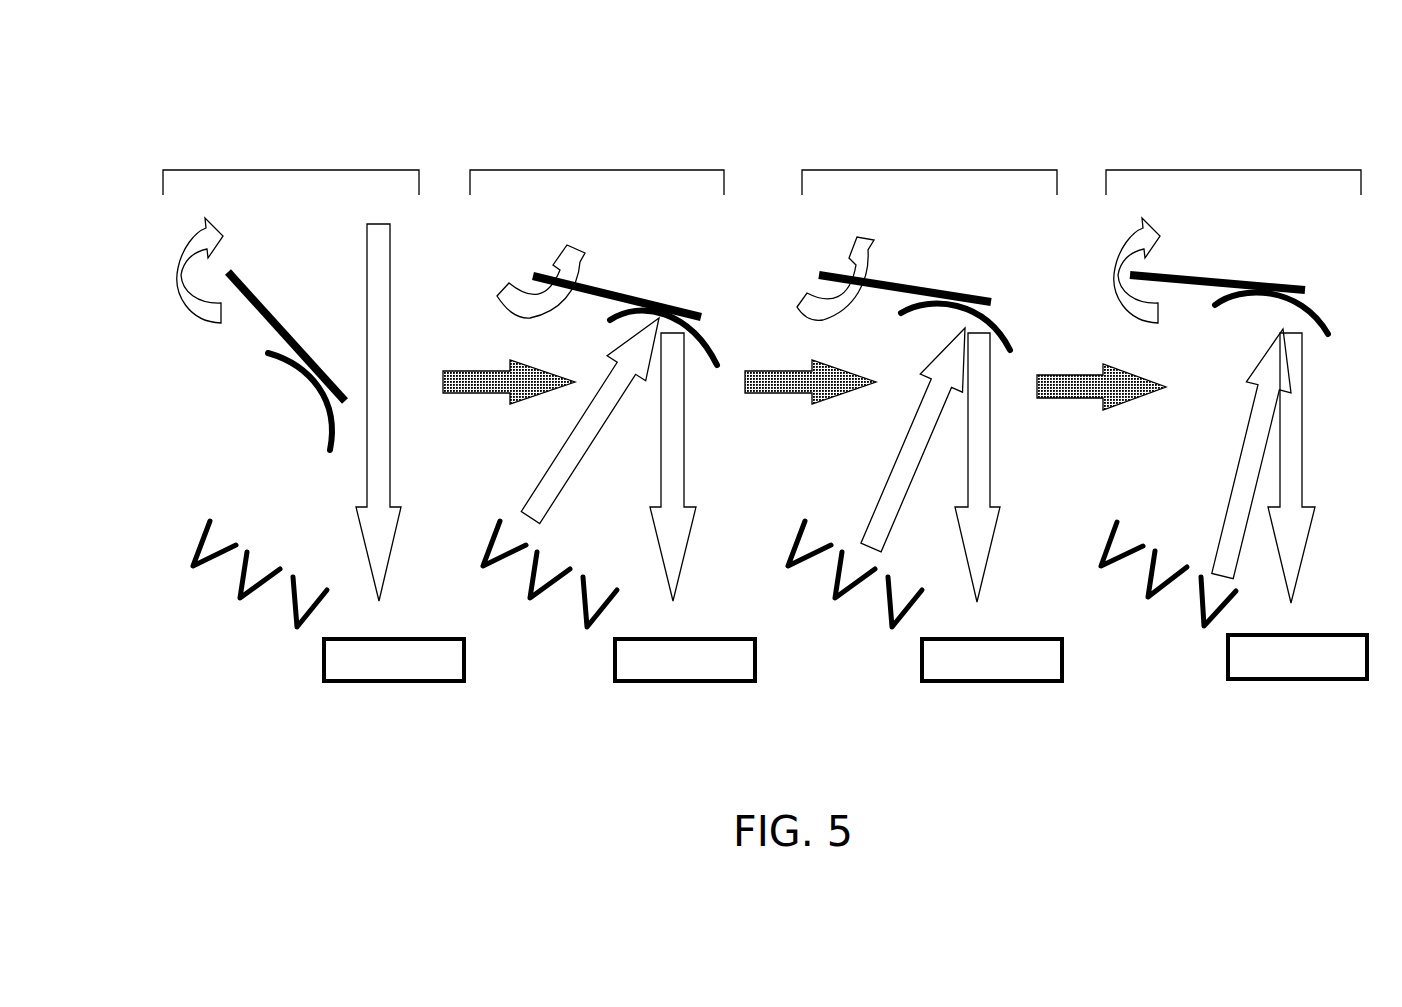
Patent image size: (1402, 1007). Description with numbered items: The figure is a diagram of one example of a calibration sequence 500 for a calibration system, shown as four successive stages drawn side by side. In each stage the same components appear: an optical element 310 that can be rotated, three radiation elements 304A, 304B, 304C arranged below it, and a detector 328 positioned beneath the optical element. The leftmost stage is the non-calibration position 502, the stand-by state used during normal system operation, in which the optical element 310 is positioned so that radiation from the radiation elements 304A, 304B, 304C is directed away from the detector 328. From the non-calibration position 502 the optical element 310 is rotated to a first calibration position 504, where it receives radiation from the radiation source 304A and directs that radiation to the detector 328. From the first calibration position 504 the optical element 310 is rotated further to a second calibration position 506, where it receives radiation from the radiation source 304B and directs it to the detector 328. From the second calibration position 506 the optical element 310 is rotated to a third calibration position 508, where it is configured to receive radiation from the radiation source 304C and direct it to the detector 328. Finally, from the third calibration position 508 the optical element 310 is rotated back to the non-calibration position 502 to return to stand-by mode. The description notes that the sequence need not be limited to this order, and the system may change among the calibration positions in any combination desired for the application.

The calibration sequence 500 is at (1062, 120).
The non-calibration position 502 is at (283, 170).
The first calibration position 504 is at (588, 170).
The second calibration position 506 is at (921, 170).
The third calibration position 508 is at (1200, 170).
The optical element 310 is at (296, 343).
The radiation source 304A is at (643, 565).
The radiation source 304B is at (698, 593).
The radiation source 304C is at (752, 622).
The detector 328 is at (845, 658).